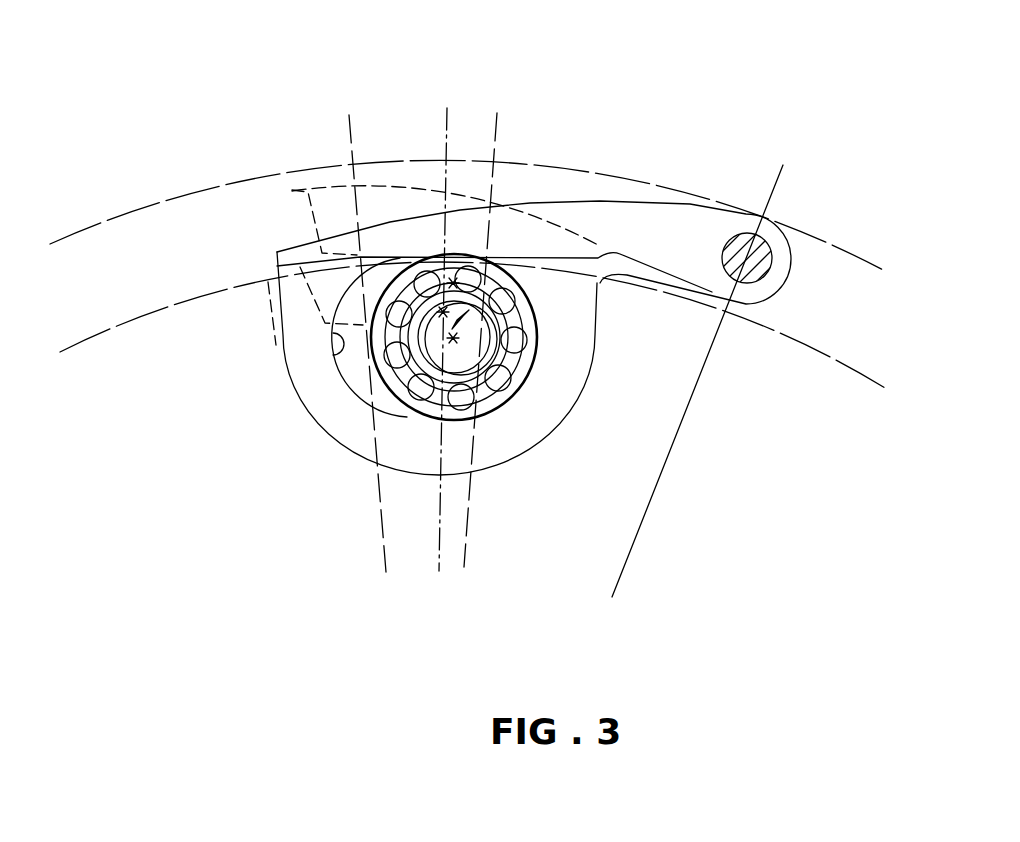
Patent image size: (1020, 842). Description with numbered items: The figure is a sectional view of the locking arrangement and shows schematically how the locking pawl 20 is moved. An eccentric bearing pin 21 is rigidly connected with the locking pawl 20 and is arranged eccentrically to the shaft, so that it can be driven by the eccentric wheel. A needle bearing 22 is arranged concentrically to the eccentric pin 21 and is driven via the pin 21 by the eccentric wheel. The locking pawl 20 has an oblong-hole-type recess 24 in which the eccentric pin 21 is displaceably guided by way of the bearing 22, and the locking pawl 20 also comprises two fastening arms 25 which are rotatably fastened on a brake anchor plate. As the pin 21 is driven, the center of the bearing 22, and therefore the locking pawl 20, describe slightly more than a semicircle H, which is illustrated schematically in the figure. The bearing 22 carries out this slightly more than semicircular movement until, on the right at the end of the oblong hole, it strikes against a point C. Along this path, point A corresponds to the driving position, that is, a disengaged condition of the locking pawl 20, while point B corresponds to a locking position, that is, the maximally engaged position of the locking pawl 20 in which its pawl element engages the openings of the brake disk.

The locking pawl 20 is at (529, 220).
The eccentric bearing pin 21 is at (444, 379).
The needle bearing 22 is at (454, 454).
The oblong-hole-type recess 24 is at (312, 345).
The fastening arms 25 is at (738, 221).
The point A is at (460, 300).
The semicircle H is at (505, 204).
The point B is at (526, 360).
The point C is at (536, 337).